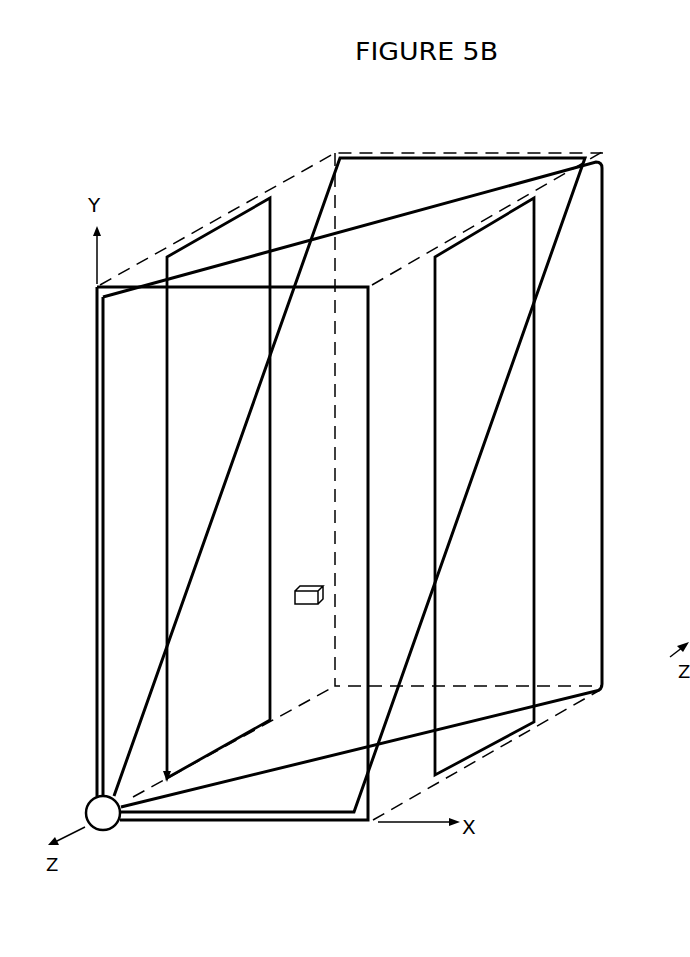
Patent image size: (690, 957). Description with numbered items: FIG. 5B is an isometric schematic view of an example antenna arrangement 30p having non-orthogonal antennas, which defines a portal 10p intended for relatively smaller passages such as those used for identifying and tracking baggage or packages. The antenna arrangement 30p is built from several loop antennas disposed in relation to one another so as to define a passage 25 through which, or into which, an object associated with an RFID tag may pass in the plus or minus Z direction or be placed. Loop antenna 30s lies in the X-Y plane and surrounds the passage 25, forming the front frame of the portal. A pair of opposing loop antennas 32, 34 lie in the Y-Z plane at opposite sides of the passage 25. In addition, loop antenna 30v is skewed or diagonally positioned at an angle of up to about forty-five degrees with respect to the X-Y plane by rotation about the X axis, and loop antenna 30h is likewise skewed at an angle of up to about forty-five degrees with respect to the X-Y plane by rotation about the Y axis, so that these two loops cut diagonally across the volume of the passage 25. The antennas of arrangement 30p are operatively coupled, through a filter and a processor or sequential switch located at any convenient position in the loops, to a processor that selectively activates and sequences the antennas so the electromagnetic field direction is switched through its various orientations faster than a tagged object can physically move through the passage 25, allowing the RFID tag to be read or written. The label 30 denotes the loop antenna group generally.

The portal 10p is at (208, 144).
The loop antenna 30s is at (97, 473).
The loop antenna 30h is at (400, 214).
The loop antenna 30v is at (460, 152).
The loop antenna 32 is at (437, 328).
The loop antenna 34 is at (168, 367).
The passage 25 is at (362, 492).
The antenna arrangement 30p is at (603, 763).
The member 30 is at (678, 481).